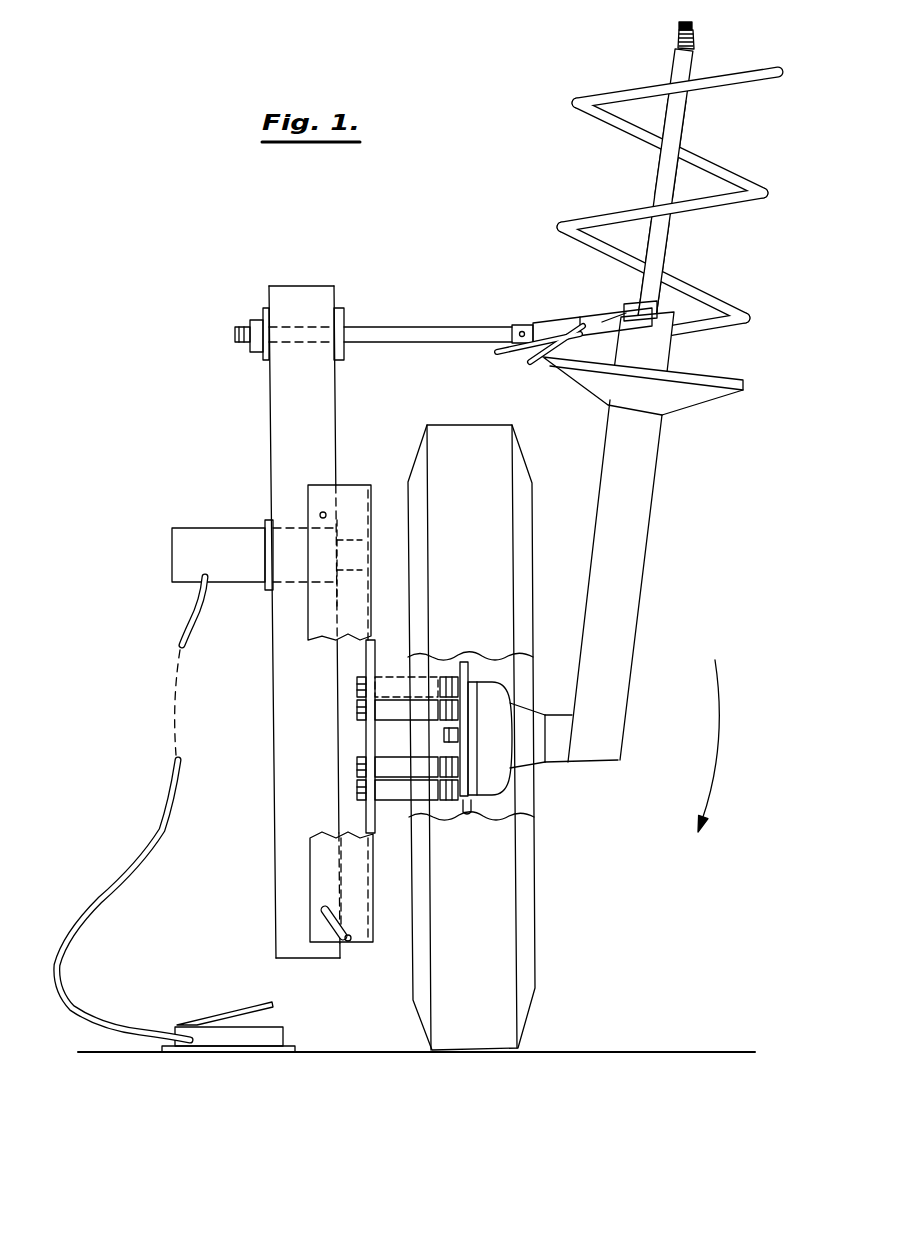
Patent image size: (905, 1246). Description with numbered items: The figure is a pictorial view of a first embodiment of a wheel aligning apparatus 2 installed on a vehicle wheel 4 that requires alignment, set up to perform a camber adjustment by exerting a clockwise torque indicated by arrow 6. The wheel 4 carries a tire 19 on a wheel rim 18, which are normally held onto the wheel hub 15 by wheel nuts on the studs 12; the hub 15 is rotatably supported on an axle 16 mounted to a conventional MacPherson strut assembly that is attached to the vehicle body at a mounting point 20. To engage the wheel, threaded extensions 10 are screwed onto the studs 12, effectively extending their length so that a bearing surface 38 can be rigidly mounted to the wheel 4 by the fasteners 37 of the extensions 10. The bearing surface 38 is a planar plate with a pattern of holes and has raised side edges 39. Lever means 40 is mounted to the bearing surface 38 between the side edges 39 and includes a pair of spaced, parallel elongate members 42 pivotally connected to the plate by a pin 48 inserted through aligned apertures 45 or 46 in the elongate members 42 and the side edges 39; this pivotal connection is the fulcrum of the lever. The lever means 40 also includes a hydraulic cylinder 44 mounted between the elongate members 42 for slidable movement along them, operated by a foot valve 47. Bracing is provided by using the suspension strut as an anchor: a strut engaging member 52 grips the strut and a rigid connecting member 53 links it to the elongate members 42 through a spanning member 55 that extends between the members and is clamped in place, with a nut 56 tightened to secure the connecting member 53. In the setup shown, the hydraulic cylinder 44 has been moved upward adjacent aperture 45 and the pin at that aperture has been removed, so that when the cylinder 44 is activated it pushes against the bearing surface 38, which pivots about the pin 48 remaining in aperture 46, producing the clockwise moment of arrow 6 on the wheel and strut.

The wheel aligning apparatus 2 is at (375, 290).
The vehicle wheel 4 is at (480, 907).
The arrow 6 is at (723, 745).
The threaded extensions 10 is at (405, 657).
The studs 12 is at (455, 662).
The wheel hub 15 is at (478, 694).
The axle 16 is at (553, 755).
The wheel rim 18 is at (468, 815).
The tire 19 is at (464, 437).
The strut mounting point 20 is at (697, 38).
The fasteners 37 is at (360, 686).
The bearing surface 38 is at (375, 660).
The raised side edges 39 is at (357, 945).
The lever means 40 is at (246, 431).
The elongate members 42 is at (283, 790).
The hydraulic cylinder 44 is at (230, 530).
The aperture 45 is at (326, 512).
The aperture 46 is at (325, 908).
The foot valve 47 is at (227, 1040).
The pin 48 is at (355, 930).
The strut engaging member 52 is at (577, 295).
The rigid connecting member 53 is at (470, 322).
The spanning member 55 is at (340, 352).
The nut 56 is at (253, 320).